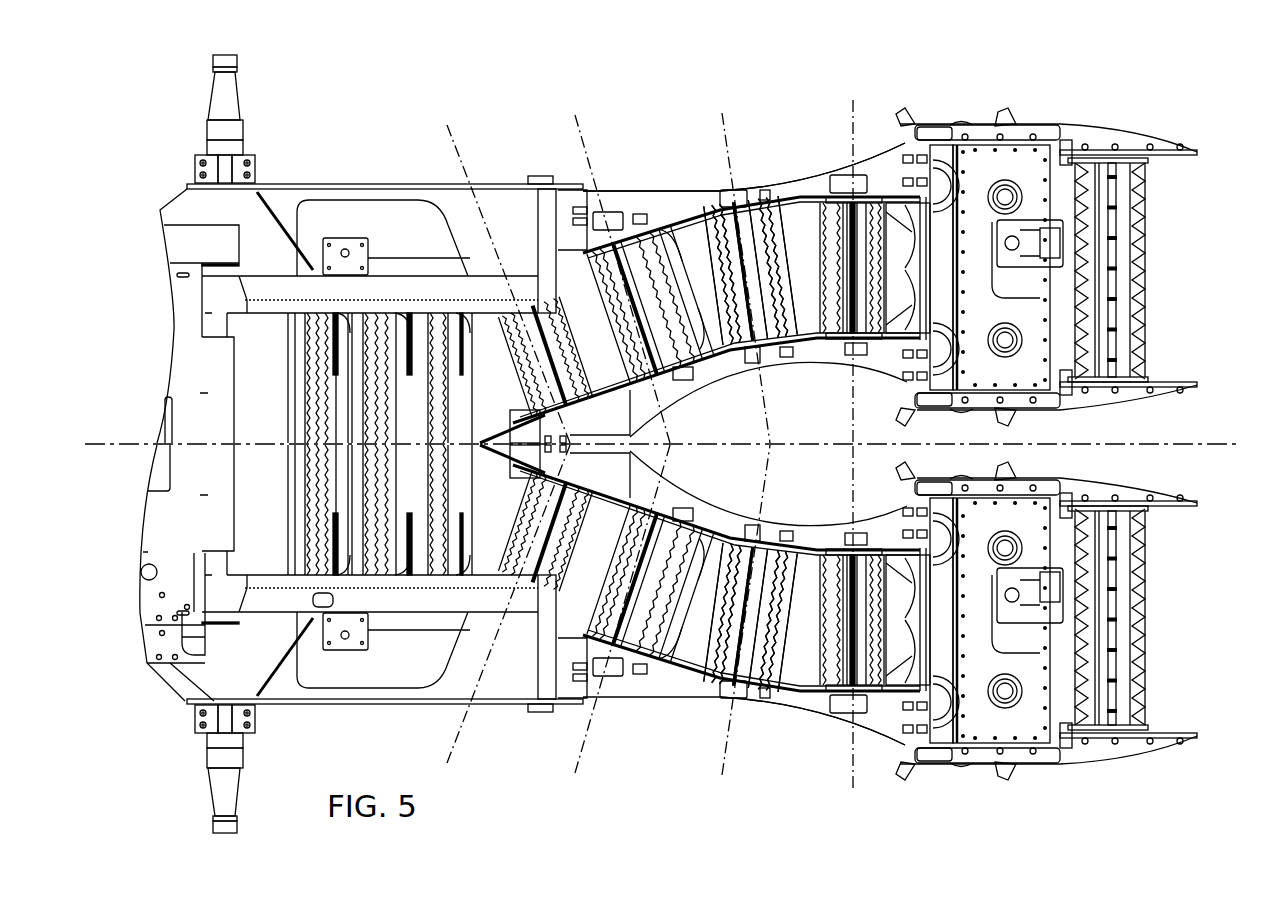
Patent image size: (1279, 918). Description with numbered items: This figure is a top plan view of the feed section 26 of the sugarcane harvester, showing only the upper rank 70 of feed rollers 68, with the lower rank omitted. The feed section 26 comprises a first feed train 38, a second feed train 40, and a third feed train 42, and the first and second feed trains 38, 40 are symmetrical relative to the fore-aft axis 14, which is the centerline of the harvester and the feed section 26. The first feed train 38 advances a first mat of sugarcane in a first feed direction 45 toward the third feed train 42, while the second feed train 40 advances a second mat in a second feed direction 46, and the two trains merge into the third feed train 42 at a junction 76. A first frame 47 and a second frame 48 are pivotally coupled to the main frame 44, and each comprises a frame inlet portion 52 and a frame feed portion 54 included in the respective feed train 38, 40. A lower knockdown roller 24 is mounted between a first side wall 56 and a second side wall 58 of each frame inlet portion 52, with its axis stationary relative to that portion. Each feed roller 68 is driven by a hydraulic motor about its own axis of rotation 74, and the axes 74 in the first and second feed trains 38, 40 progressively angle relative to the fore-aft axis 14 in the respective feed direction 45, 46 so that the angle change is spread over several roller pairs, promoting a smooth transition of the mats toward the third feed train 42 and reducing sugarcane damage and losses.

The fore-aft axis 14 is at (1200, 440).
The lower knockdown roller 24 is at (1123, 227).
The feed section 26 is at (680, 105).
The first feed train 38 is at (791, 745).
The second feed train 40 is at (782, 119).
The third feed train 42 is at (352, 137).
The frame 44 is at (390, 693).
The first feed direction 45 is at (670, 588).
The second feed direction 46 is at (671, 300).
The first frame 47 is at (667, 690).
The second frame 48 is at (668, 197).
The frame inlet portion 52 is at (1158, 112).
The frame feed portion 54 is at (832, 185).
The first side wall 56 is at (1173, 382).
The second side wall 58 is at (1173, 153).
The feed roller 68 is at (768, 358).
The upper rank 70 is at (820, 734).
The axis of rotation 74 is at (664, 445).
The junction 76 is at (496, 422).